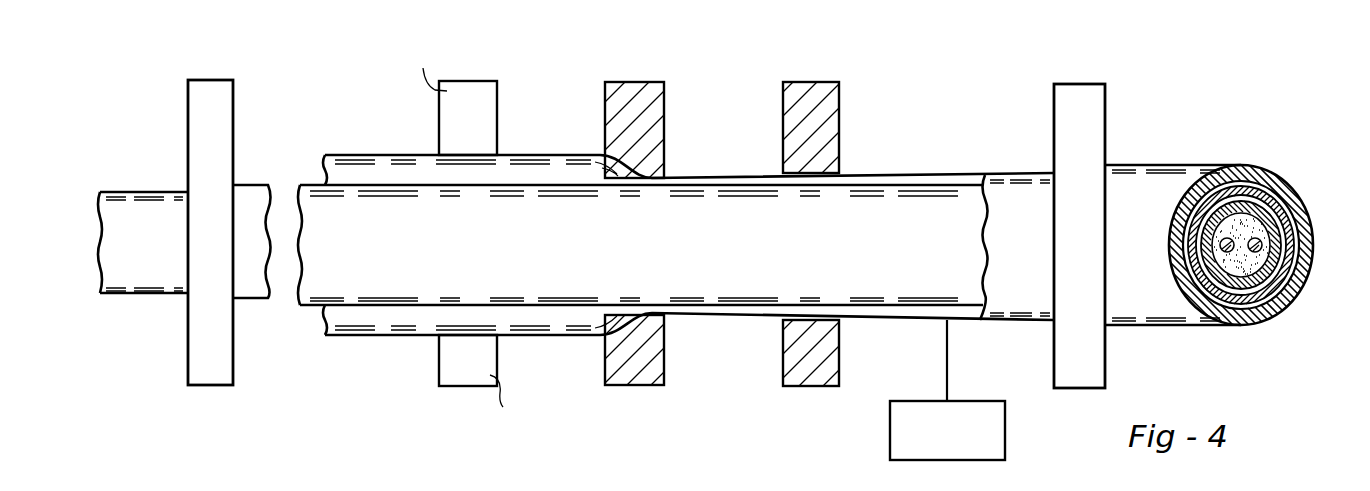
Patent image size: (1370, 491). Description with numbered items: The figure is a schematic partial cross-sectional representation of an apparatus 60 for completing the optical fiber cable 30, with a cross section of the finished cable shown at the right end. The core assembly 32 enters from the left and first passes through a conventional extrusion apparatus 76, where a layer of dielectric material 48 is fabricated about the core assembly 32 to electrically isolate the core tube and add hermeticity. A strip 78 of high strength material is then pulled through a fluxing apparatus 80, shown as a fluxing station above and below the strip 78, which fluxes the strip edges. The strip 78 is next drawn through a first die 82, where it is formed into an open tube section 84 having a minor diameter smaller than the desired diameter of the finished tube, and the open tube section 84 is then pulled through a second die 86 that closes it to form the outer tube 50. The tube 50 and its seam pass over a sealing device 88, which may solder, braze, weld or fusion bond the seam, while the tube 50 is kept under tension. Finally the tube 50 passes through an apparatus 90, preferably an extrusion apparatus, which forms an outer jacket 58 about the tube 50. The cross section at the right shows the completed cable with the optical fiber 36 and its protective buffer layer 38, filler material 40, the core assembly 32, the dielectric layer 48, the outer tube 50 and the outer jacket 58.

The optical fiber cable 30 is at (1216, 145).
The core assembly 32 is at (110, 207).
The optical fiber 36 is at (1271, 315).
The protective buffer layer 38 is at (1228, 282).
The filler material 40 is at (1305, 272).
The layer of dielectric material 48 is at (1293, 228).
The outer tube 50 is at (1010, 173).
The outer jacket 58 is at (1245, 166).
The apparatus for completing the optical fiber cable 60 is at (742, 72).
The extrusion apparatus 76 is at (196, 111).
The strip 78 is at (390, 170).
The fluxing apparatus 80 is at (475, 120).
The first die 82 is at (640, 88).
The open tube section 84 is at (738, 318).
The second die 86 is at (830, 104).
The sealing device 88 is at (890, 436).
The jacket fabricating apparatus 90 is at (1097, 104).